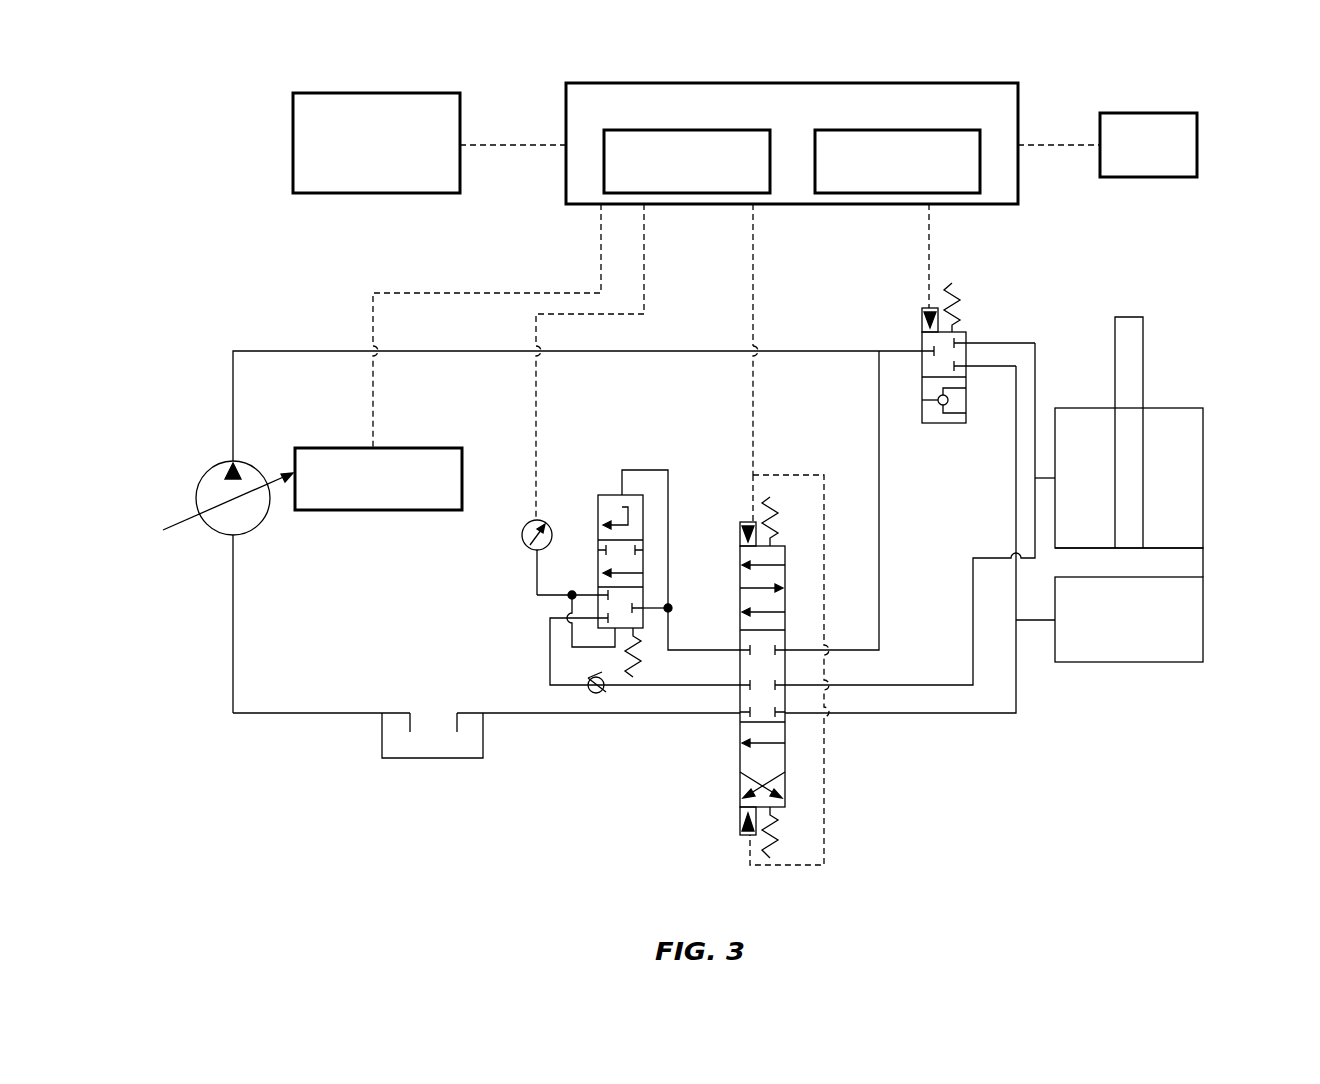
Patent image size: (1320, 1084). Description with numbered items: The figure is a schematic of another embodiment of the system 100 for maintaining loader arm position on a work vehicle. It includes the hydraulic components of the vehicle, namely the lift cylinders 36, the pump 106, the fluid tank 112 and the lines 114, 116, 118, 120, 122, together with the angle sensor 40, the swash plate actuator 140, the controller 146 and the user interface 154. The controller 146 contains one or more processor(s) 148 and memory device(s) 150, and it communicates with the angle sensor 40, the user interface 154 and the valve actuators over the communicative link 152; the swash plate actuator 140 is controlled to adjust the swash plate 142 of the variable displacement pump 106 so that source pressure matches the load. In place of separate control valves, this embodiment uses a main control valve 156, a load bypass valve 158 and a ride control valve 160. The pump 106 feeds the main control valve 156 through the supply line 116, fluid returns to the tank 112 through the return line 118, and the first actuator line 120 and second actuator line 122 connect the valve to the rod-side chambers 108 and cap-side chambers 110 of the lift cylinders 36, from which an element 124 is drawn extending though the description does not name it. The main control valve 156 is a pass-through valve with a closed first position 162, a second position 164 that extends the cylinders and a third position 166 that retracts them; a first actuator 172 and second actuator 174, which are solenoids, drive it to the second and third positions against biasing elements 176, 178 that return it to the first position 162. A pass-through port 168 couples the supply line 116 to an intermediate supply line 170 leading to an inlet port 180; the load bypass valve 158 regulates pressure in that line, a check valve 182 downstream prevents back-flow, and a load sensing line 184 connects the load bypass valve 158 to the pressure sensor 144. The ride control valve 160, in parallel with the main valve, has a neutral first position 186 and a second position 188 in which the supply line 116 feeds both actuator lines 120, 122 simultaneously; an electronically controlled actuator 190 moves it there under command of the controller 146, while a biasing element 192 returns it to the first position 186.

The system 100 is at (162, 122).
The angle sensor 40 is at (378, 193).
The controller 146 is at (820, 83).
The processor(s) 148 is at (692, 193).
The memory device(s) 150 is at (893, 193).
The user interface 154 is at (1143, 113).
The communicative link 152 is at (518, 145).
The supply line 116 is at (310, 351).
The line 114 is at (234, 668).
The return line 118 is at (662, 713).
The second actuator line 122 is at (955, 713).
The first actuator line 120 is at (910, 685).
The fluid tank 112 is at (418, 758).
The pump 106 is at (202, 478).
The swash plate 142 is at (180, 530).
The swash plate actuator 140 is at (374, 510).
The pressure sensor 144 is at (527, 523).
The load sensing line 184 is at (536, 585).
The load bypass valve 158 is at (598, 496).
The check valve 182 is at (591, 694).
The main control valve 156 is at (716, 794).
The third position 166 is at (748, 601).
The intermediate supply line 170 is at (686, 650).
The inlet port 180 is at (740, 685).
The first position 162 is at (748, 700).
The second position 164 is at (748, 765).
The second actuator 174 is at (740, 535).
The first actuator 172 is at (738, 820).
The biasing element 178 is at (774, 540).
The biasing element 176 is at (774, 858).
The pass-through port 168 is at (785, 650).
The ride control valve 160 is at (962, 443).
The first position 186 is at (934, 347).
The second position 188 is at (934, 422).
The electronically controlled actuator 190 is at (921, 318).
The biasing element 192 is at (957, 304).
The lift cylinders 36 is at (1207, 400).
The rod-side chambers 108 is at (1203, 485).
The cap-side chambers 110 is at (1203, 630).
The piston rod 124 is at (1143, 333).